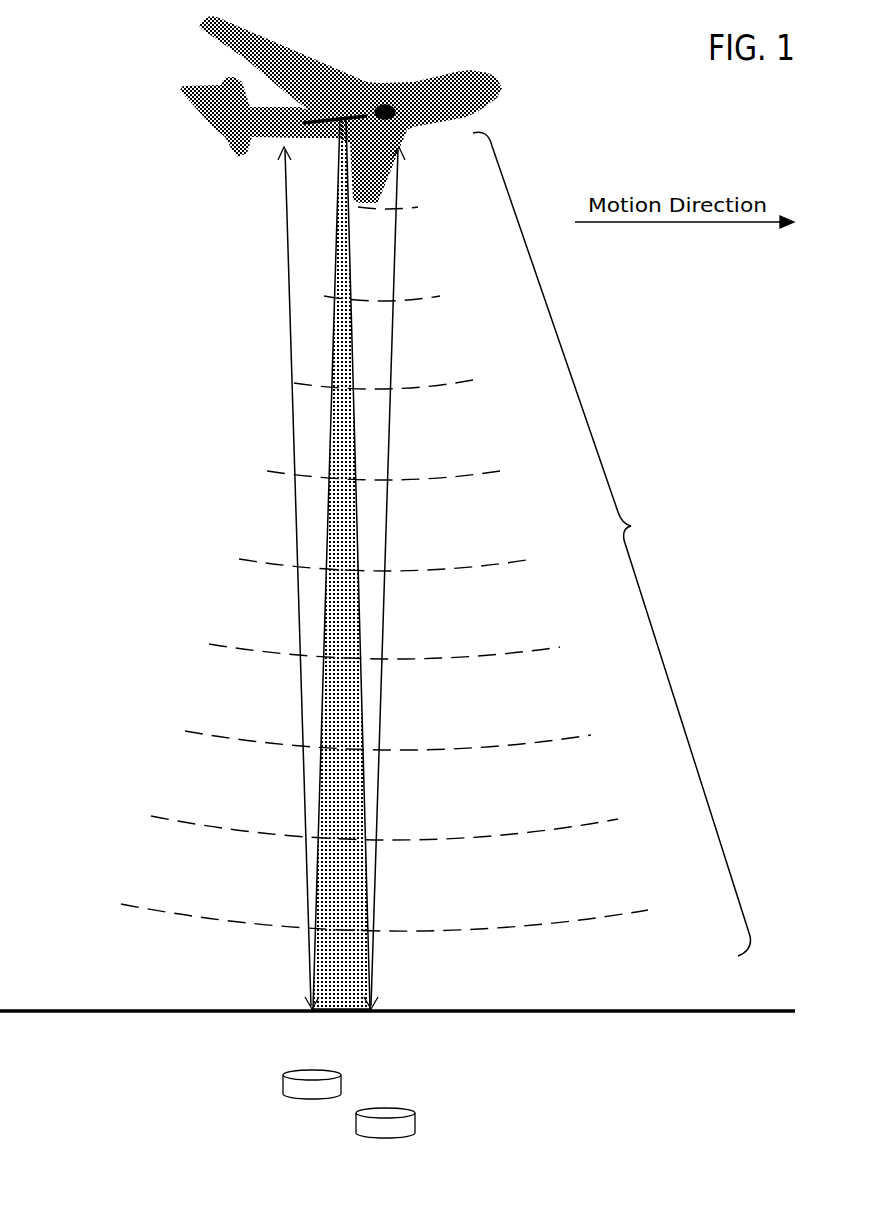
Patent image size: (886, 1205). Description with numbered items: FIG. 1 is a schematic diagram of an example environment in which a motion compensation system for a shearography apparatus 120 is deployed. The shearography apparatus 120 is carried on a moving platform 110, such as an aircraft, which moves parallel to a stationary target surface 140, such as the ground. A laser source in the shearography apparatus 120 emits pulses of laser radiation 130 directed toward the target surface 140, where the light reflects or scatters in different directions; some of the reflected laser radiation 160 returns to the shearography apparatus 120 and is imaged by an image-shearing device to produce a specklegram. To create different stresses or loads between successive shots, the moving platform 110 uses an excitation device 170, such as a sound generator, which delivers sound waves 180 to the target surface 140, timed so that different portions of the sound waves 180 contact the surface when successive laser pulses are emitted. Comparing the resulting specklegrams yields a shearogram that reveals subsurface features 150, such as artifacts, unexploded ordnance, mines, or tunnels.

The moving platform 110 is at (475, 110).
The shearography apparatus 120 is at (308, 110).
The laser radiation 130 is at (337, 818).
The target surface 140 is at (397, 1012).
The subsurface features 150 is at (283, 1088).
The reflected laser radiation 160 is at (518, 339).
The excitation device 170 is at (381, 94).
The sound waves 180 is at (730, 544).